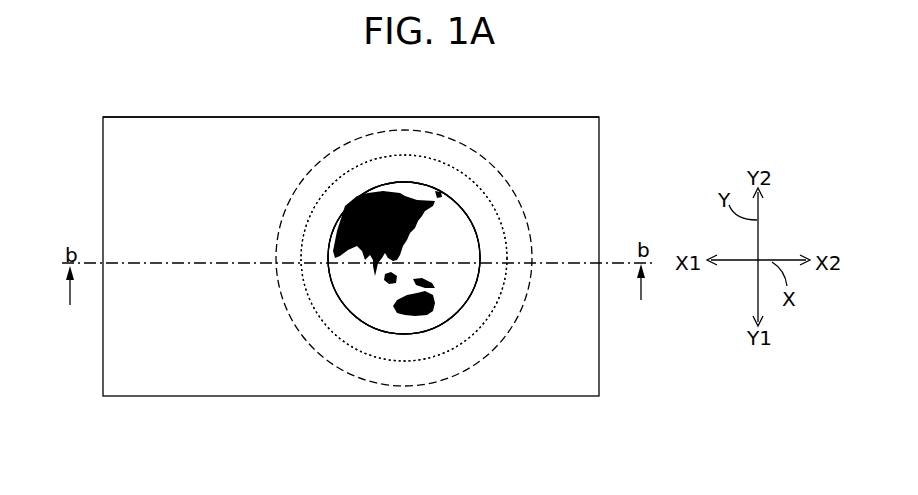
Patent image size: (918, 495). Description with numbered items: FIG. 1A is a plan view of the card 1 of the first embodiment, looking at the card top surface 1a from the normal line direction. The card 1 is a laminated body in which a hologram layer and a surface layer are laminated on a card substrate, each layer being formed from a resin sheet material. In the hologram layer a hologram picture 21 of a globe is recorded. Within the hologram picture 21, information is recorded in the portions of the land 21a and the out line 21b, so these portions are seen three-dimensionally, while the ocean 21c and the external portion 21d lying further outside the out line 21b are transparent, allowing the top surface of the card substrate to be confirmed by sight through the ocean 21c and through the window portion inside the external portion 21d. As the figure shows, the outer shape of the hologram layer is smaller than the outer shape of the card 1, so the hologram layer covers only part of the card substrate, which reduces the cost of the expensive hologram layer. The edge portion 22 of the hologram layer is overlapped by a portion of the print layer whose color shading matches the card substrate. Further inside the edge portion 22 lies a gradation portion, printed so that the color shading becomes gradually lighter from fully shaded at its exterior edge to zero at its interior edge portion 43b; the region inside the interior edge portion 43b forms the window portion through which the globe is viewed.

The card 1 is at (135, 103).
The card top surface 1a is at (222, 126).
The edge portion of the hologram layer 22 is at (404, 130).
The interior edge portion of the gradation portion 43b is at (453, 165).
The hologram picture 21 is at (443, 325).
The land 21a is at (415, 316).
The out line 21b is at (397, 331).
The ocean 21c is at (370, 308).
The external portion 21d is at (332, 317).